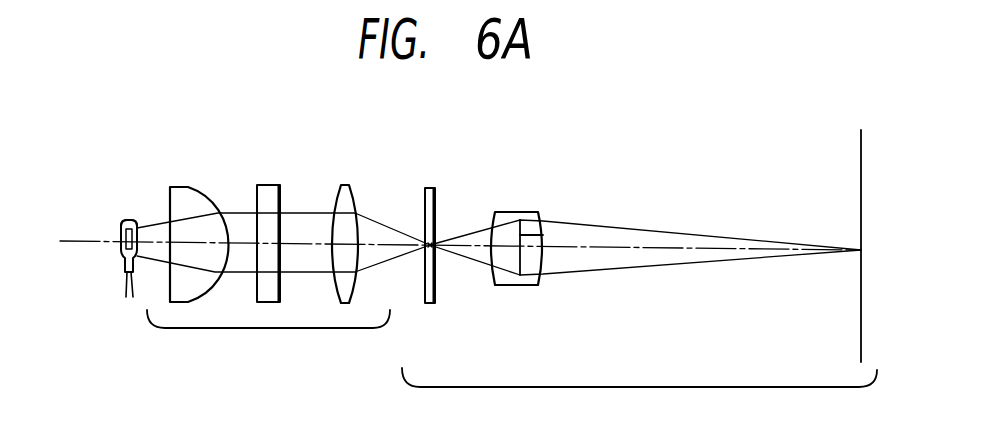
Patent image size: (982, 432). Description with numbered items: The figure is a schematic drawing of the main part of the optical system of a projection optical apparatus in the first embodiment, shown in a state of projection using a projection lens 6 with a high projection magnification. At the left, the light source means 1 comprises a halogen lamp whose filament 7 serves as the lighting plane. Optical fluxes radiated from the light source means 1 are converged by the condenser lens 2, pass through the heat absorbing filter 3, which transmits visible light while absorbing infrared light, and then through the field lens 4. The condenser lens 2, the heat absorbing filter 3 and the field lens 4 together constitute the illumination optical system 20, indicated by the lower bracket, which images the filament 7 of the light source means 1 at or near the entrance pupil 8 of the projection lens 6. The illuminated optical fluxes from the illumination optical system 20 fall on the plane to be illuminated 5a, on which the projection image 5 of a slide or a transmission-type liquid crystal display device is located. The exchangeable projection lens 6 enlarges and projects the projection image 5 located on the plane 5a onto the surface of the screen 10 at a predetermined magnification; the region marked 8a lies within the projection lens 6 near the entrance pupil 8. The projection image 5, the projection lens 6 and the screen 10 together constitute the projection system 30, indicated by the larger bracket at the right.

The light source means 1 is at (124, 221).
The filament 7 is at (121, 233).
The condenser lens 2 is at (178, 186).
The heat absorbing filter 3 is at (270, 185).
The field lens 4 is at (347, 185).
The projection image 5 is at (432, 188).
The plane to be illuminated 5a is at (437, 296).
The projection lens 6 is at (500, 212).
The entrance pupil 8 is at (600, 146).
The lens element portion 8a is at (543, 226).
The screen 10 is at (861, 161).
The illumination optical system 20 is at (268, 339).
The projection system 30 is at (639, 395).